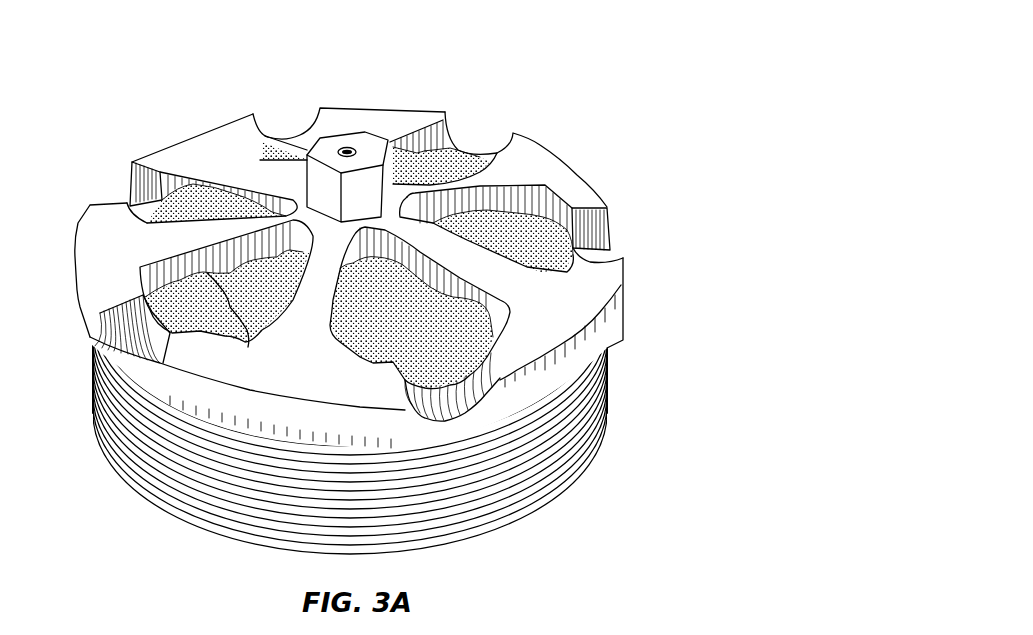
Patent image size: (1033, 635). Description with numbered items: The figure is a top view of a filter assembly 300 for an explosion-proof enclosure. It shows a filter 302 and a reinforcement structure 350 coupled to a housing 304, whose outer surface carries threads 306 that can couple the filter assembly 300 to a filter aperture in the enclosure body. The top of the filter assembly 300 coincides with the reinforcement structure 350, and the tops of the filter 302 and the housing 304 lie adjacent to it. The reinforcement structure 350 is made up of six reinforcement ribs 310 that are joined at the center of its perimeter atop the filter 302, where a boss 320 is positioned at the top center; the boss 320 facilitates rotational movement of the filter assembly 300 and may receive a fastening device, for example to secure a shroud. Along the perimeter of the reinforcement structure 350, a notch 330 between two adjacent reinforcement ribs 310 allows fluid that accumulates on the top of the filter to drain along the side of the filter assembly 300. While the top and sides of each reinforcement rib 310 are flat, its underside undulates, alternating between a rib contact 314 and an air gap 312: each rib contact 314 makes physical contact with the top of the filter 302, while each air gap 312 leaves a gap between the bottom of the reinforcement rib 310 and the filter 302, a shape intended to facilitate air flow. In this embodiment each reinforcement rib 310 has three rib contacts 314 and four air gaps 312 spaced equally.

The filter assembly 300 is at (627, 63).
The filter 302 is at (440, 168).
The housing 304 is at (243, 540).
The threads 306 is at (590, 427).
The reinforcement rib 310 is at (258, 160).
The air gap 312 is at (243, 335).
The rib contact 314 is at (292, 278).
The boss 320 is at (367, 146).
The notch 330 is at (597, 238).
The reinforcement structure 350 is at (545, 133).